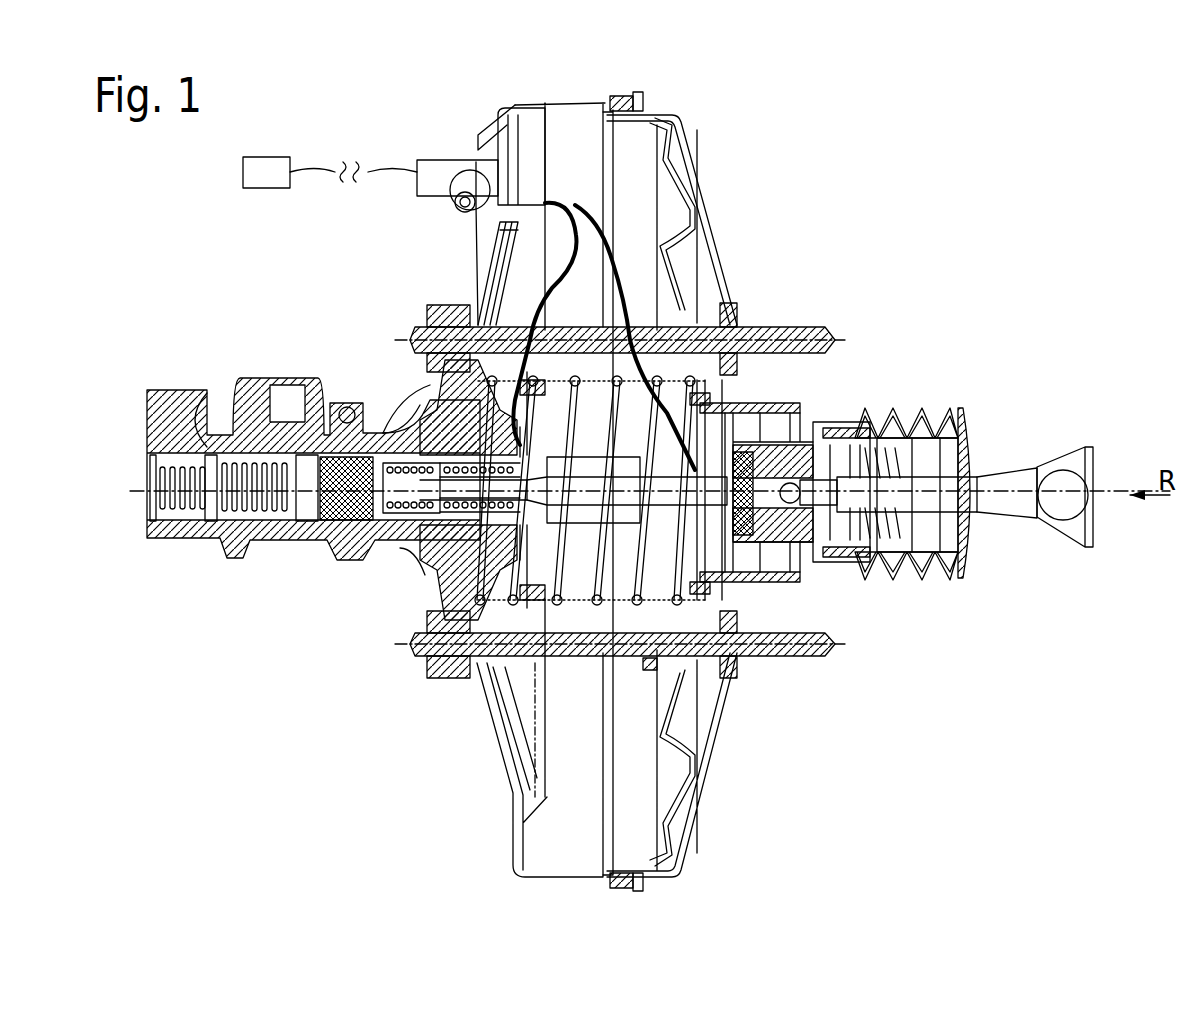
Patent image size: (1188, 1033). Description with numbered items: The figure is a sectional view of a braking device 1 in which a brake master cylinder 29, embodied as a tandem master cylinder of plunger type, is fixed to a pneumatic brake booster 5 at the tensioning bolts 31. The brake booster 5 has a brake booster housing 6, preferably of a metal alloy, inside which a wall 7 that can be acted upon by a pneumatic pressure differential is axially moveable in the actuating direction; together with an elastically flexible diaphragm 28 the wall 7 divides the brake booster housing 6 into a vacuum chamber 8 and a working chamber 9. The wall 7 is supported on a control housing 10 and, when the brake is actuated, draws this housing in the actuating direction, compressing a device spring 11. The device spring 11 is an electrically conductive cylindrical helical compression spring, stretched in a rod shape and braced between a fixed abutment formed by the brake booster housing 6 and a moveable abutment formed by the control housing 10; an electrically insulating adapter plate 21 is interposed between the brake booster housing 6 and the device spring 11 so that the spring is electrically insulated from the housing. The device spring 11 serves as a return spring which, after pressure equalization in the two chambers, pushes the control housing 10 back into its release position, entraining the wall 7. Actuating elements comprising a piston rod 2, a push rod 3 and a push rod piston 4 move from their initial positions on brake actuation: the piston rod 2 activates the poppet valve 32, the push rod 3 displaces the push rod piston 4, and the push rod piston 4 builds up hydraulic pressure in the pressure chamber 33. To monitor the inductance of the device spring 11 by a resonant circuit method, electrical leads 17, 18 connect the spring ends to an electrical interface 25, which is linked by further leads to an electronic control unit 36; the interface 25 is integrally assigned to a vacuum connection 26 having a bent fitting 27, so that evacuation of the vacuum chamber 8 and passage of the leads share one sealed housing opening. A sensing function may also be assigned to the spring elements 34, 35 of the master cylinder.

The braking device 1 is at (797, 135).
The piston rod 2 is at (997, 510).
The push rod 3 is at (633, 497).
The push rod piston 4 is at (478, 665).
The pneumatic brake booster 5 is at (688, 126).
The brake booster housing 6 is at (718, 252).
The wall 7 is at (640, 172).
The vacuum chamber 8 is at (568, 825).
The working chamber 9 is at (710, 705).
The control housing 10 is at (850, 567).
The device spring 11 is at (477, 300).
The electrical lead 17 is at (575, 202).
The electrical lead 18 is at (572, 238).
The adapter plate 21 is at (483, 583).
The electrical interface 25 is at (432, 158).
The vacuum connection 26 is at (482, 135).
The bent fitting 27 is at (455, 208).
The diaphragm 28 is at (645, 110).
The brake master cylinder 29 is at (287, 543).
The tensioning bolts 31 is at (413, 340).
The poppet valve 32 is at (830, 455).
The pressure chamber 33 is at (370, 400).
The spring element 34 is at (183, 500).
The spring element 35 is at (383, 497).
The electronic control unit 36 is at (266, 156).